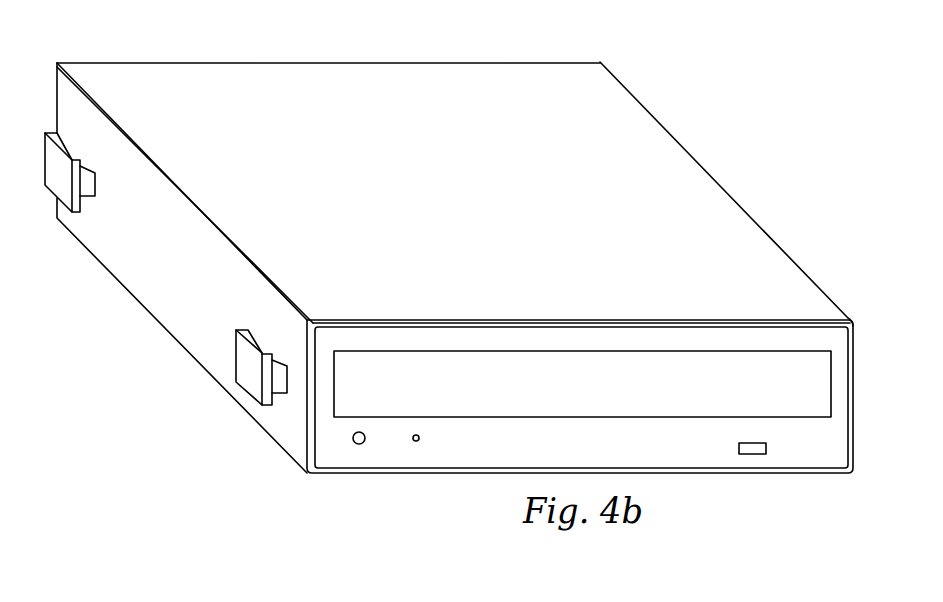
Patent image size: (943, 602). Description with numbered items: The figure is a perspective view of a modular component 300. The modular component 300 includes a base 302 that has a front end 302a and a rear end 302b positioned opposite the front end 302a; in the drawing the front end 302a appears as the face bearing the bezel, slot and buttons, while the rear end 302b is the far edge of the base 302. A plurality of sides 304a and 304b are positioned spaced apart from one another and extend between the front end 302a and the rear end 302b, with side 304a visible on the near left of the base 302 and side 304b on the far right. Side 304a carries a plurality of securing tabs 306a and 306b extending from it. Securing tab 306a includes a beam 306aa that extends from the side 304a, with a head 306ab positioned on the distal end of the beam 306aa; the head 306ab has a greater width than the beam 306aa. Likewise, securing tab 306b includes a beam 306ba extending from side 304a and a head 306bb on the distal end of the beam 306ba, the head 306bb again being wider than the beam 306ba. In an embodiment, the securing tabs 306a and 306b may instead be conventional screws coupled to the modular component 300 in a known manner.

The modular component 300 is at (435, 259).
The base 302 is at (490, 198).
The front end 302a is at (705, 455).
The rear end 302b is at (255, 62).
The side 304a is at (145, 300).
The side 304b is at (728, 193).
The securing tab 306a is at (100, 180).
The beam 306aa is at (85, 187).
The head 306ab is at (67, 145).
The securing tab 306b is at (238, 372).
The beam 306ba is at (278, 383).
The head 306bb is at (255, 337).